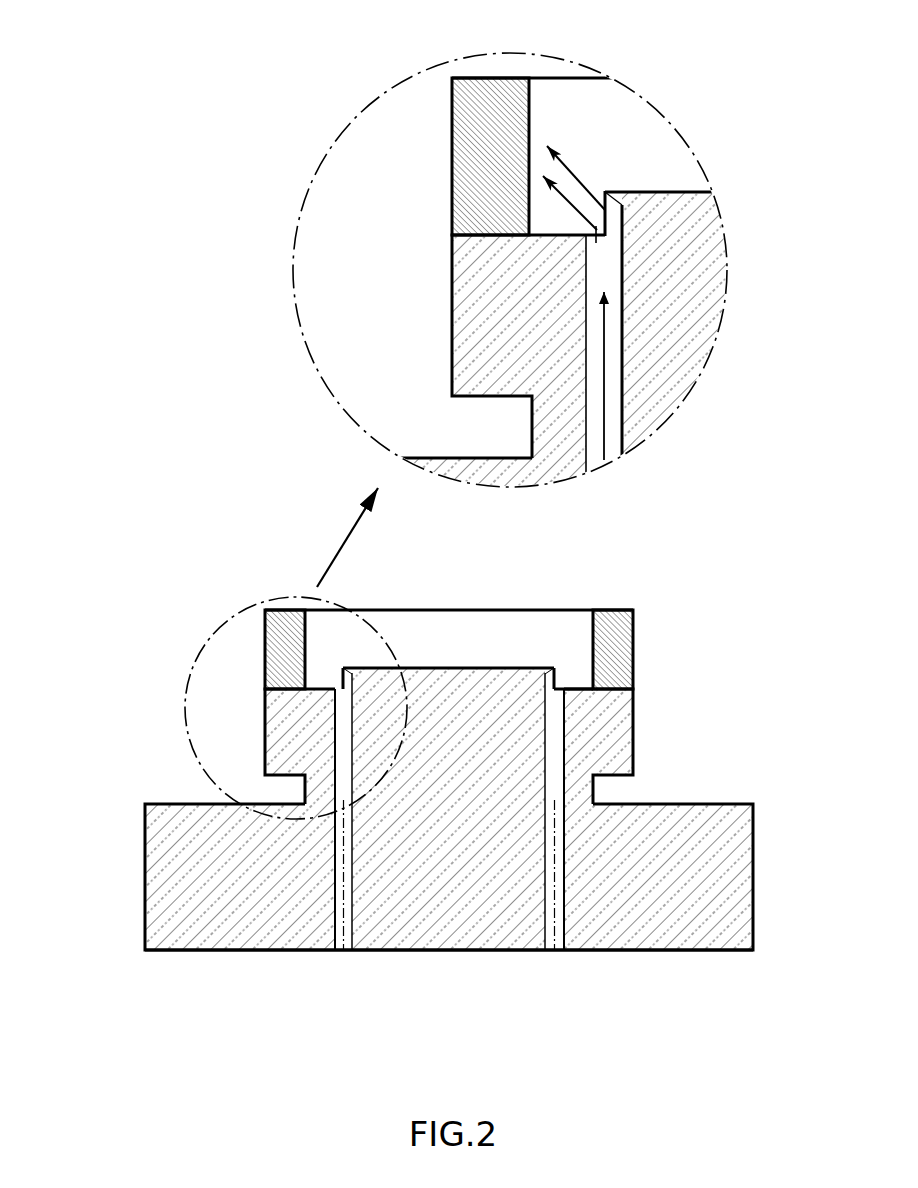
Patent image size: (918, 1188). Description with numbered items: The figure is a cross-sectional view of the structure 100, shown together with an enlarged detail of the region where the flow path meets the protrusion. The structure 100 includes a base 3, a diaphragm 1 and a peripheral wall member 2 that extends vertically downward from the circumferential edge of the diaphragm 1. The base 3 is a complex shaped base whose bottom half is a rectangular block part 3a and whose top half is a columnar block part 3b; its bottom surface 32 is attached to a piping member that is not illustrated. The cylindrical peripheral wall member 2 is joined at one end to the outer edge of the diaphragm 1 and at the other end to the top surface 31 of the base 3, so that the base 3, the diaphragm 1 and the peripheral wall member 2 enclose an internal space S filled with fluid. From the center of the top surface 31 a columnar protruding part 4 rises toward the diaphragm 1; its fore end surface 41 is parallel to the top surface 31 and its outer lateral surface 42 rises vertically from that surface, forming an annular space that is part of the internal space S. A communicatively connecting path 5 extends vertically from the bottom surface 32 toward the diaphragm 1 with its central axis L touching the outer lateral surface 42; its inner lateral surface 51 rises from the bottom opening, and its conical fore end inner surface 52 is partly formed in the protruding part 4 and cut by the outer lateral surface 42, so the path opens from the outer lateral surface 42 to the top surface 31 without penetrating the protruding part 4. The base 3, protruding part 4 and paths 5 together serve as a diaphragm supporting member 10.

The diaphragm 1 is at (385, 610).
The peripheral wall member 2 is at (633, 647).
The base 3 is at (449, 592).
The rectangular block part 3a is at (715, 804).
The columnar block part 3b is at (633, 736).
The protruding part 4 is at (344, 668).
The fore end surface 41 is at (487, 668).
The outer lateral surface 42 is at (345, 678).
The communicatively connecting path 5 is at (346, 912).
The inner lateral surface 51 is at (607, 322).
The fore end inner surface 52 is at (614, 222).
The diaphragm supporting member 10 is at (116, 728).
The structure 100 is at (694, 552).
The top surface 31 is at (576, 689).
The bottom surface 32 is at (260, 952).
The central axis L is at (345, 952).
The internal space S is at (622, 149).